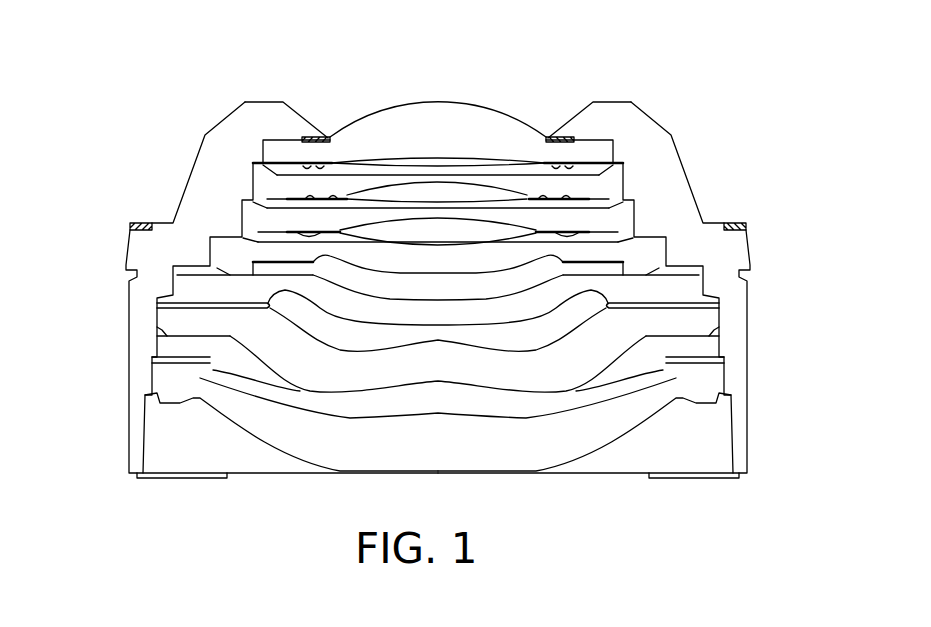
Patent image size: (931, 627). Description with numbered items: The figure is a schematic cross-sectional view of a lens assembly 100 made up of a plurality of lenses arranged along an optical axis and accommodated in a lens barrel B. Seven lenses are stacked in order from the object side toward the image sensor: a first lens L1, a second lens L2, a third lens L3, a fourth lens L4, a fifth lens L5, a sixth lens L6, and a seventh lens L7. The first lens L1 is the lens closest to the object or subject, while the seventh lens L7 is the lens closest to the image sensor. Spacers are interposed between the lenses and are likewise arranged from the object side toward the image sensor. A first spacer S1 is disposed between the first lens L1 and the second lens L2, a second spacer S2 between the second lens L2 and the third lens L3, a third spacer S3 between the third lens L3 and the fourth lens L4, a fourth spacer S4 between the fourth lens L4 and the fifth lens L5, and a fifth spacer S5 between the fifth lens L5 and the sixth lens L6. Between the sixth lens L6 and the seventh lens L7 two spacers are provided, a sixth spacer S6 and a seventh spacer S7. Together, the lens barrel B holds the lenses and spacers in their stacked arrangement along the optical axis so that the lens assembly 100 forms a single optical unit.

The lens assembly 100 is at (370, 31).
The lens barrel B is at (669, 136).
The first lens L1 is at (260, 158).
The second lens L2 is at (253, 193).
The third lens L3 is at (237, 225).
The fourth lens L4 is at (187, 262).
The fifth lens L5 is at (160, 291).
The sixth lens L6 is at (157, 323).
The seventh lens L7 is at (148, 383).
The first spacer S1 is at (567, 157).
The second spacer S2 is at (612, 178).
The third spacer S3 is at (624, 208).
The fourth spacer S4 is at (690, 268).
The fifth spacer S5 is at (715, 294).
The sixth spacer S6 is at (710, 333).
The seventh spacer S7 is at (710, 354).